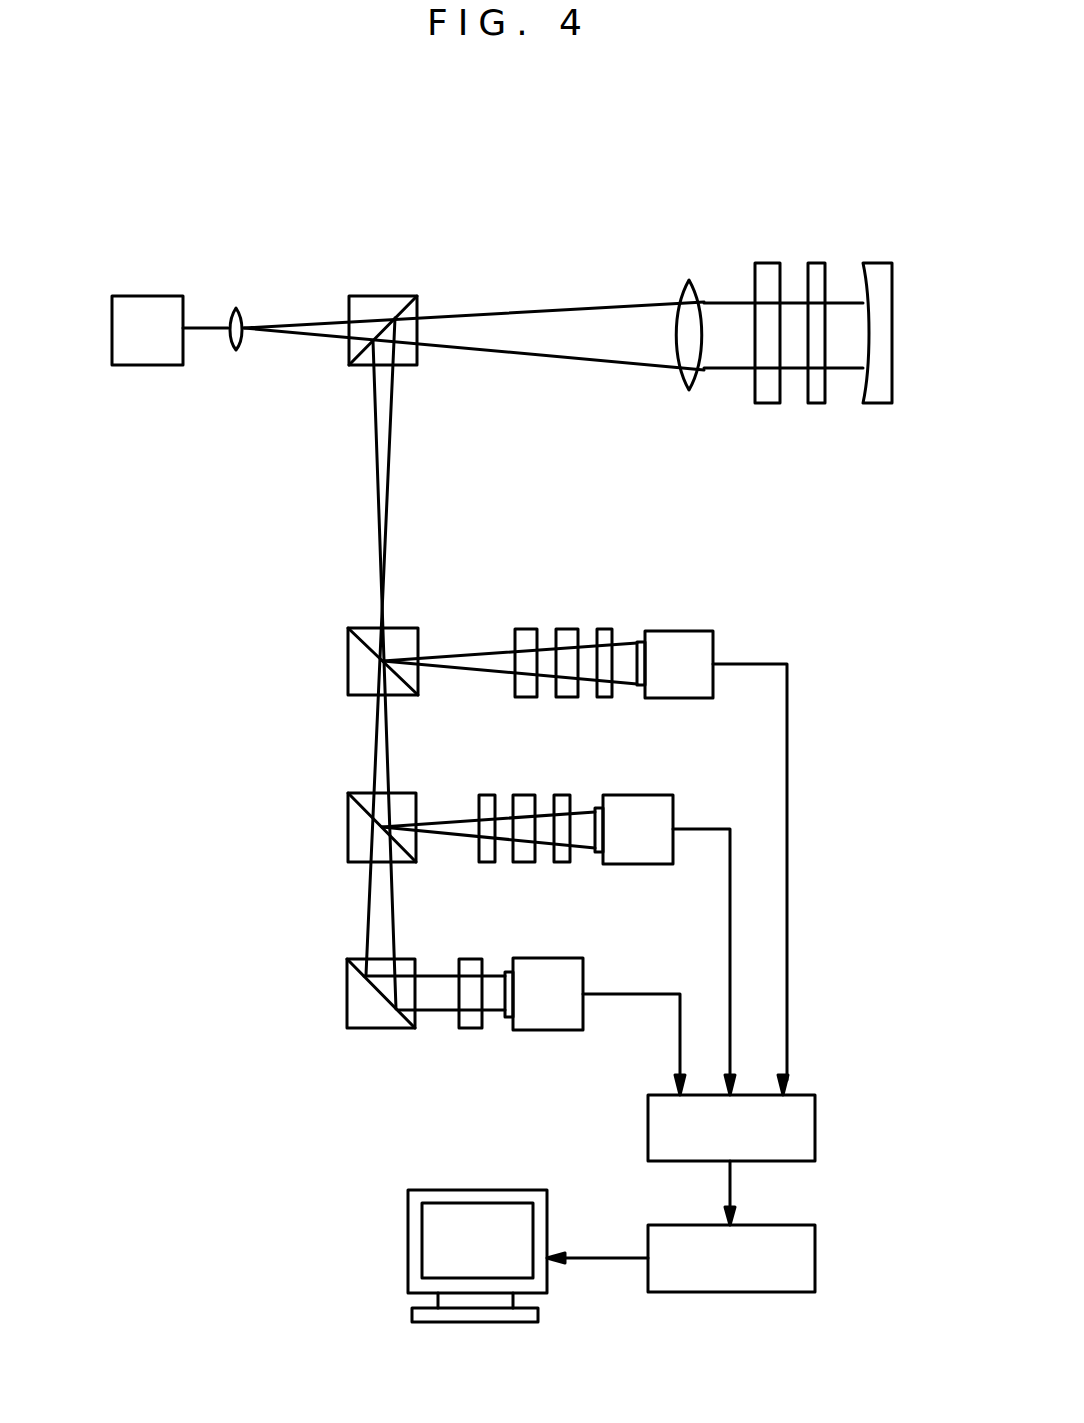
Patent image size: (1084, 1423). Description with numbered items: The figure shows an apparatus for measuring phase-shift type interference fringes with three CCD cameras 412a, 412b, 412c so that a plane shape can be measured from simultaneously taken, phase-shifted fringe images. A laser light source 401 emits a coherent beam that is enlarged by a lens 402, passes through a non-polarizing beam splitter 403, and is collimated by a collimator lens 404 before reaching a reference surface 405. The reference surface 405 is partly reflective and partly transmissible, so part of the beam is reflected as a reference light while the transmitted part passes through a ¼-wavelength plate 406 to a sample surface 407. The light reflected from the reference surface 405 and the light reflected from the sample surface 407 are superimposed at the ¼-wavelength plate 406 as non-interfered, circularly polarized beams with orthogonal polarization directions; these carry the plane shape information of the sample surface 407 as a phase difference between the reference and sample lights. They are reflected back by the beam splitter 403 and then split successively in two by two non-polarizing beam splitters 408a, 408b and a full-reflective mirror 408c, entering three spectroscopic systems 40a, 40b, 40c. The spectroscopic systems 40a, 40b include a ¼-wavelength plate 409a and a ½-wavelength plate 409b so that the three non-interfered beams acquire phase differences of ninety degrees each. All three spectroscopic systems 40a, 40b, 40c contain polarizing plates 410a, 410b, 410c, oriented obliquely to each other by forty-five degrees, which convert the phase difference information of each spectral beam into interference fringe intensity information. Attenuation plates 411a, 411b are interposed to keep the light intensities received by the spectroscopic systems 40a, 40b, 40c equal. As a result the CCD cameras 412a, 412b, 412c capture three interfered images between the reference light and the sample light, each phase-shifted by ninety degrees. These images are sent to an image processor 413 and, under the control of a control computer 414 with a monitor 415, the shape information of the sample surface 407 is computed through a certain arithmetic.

The laser light source 401 is at (148, 296).
The lens 402 is at (236, 308).
The non-polarizing beam splitter 403 is at (381, 296).
The collimator lens 404 is at (689, 280).
The reference surface 405 is at (755, 352).
The ¼-wavelength plate 406 is at (816, 263).
The sample surface 407 is at (867, 352).
The non-polarizing beam splitter 408a is at (364, 628).
The non-polarizing beam splitter 408b is at (362, 793).
The full-reflective mirror 408c is at (360, 959).
The ¼-wavelength plate 409a is at (525, 629).
The ½-wavelength plate 409b is at (487, 795).
The polarizing plate 410a is at (568, 629).
The polarizing plate 410b is at (527, 795).
The polarizing plate 410c is at (472, 959).
The attenuation plate 411a is at (604, 629).
The attenuation plate 411b is at (562, 795).
The CCD camera 412a is at (690, 631).
The CCD camera 412b is at (640, 795).
The CCD camera 412c is at (560, 958).
The spectroscopic system 40a is at (475, 630).
The spectroscopic system 40b is at (451, 800).
The spectroscopic system 40c is at (388, 966).
The image processor 413 is at (815, 1128).
The control computer 414 is at (815, 1255).
The monitor 415 is at (478, 1190).